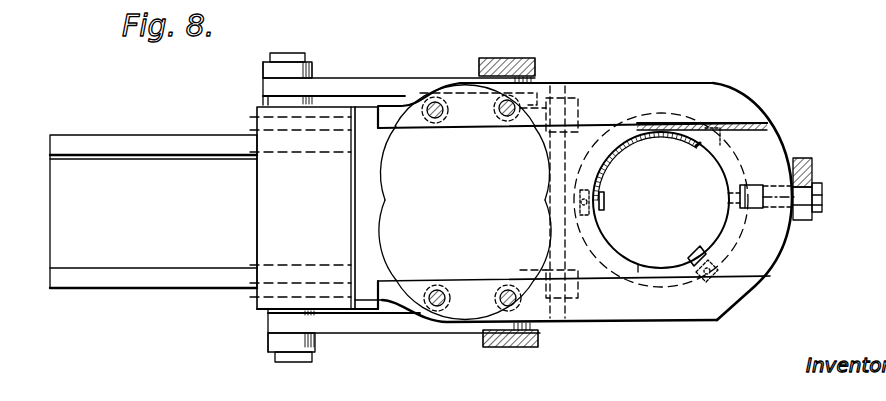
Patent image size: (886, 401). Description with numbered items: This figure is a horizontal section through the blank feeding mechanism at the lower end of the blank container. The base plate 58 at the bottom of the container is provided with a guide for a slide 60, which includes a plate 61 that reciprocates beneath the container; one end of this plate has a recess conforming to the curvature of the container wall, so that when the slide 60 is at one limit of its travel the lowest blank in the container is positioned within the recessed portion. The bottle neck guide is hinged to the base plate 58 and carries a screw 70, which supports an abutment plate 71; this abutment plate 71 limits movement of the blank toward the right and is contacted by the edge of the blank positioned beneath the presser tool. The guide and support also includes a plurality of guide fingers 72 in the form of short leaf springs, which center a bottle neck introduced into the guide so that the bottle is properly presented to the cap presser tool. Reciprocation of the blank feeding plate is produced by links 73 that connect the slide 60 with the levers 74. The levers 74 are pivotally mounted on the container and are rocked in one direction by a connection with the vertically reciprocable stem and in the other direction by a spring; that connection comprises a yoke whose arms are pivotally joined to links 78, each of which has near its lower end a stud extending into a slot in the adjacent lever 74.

The base plate 58 is at (470, 303).
The slide 60 is at (287, 198).
The plate 61 is at (588, 262).
The screw 70 is at (823, 190).
The abutment plate 71 is at (747, 195).
The guide fingers 72 is at (703, 253).
The links 73 is at (382, 87).
The levers 74 is at (513, 58).
The links 78 is at (708, 141).